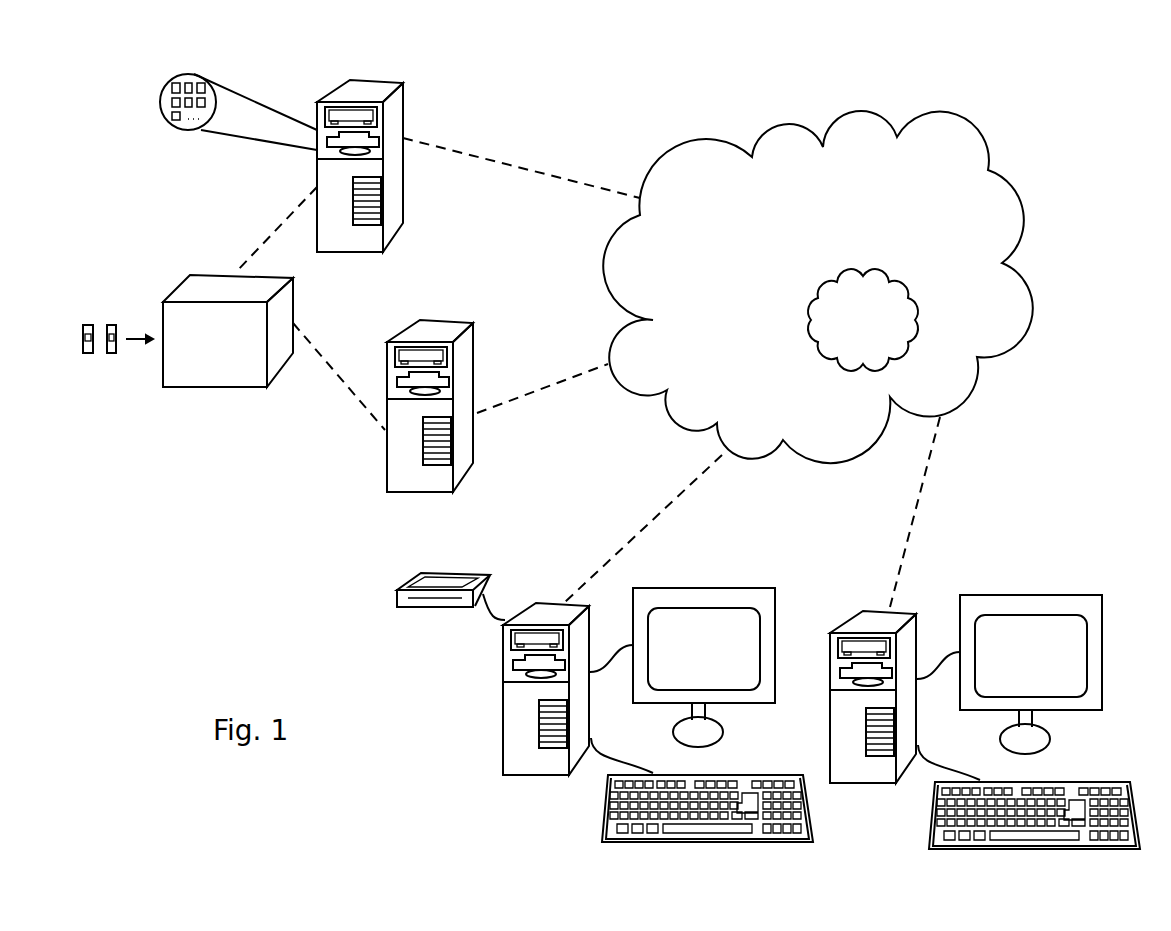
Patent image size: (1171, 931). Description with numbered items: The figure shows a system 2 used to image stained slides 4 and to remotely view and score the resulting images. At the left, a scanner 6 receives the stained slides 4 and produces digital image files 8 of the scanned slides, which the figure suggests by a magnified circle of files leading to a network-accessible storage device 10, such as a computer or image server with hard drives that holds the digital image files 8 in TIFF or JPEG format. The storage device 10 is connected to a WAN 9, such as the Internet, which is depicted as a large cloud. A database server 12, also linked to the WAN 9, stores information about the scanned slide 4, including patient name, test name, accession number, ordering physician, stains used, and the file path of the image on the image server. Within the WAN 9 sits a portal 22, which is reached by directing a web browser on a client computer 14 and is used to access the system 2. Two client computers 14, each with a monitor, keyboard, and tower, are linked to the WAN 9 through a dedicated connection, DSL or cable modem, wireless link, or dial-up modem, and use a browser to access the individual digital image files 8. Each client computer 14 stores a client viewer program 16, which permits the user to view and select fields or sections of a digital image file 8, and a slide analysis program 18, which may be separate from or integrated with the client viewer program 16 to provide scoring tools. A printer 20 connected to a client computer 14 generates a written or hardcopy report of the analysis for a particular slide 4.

The system 2 is at (548, 100).
The stained slides 4 is at (90, 325).
The scanner 6 is at (215, 268).
The digital image files 8 is at (176, 74).
The WAN 9 is at (923, 110).
The network-accessible storage device 10 is at (402, 82).
The database server 12 is at (450, 320).
The client computer 14 is at (801, 718).
The client viewer program 16 is at (505, 654).
The slide analysis program 18 is at (505, 692).
The printer 20 is at (457, 571).
The portal 22 is at (886, 334).